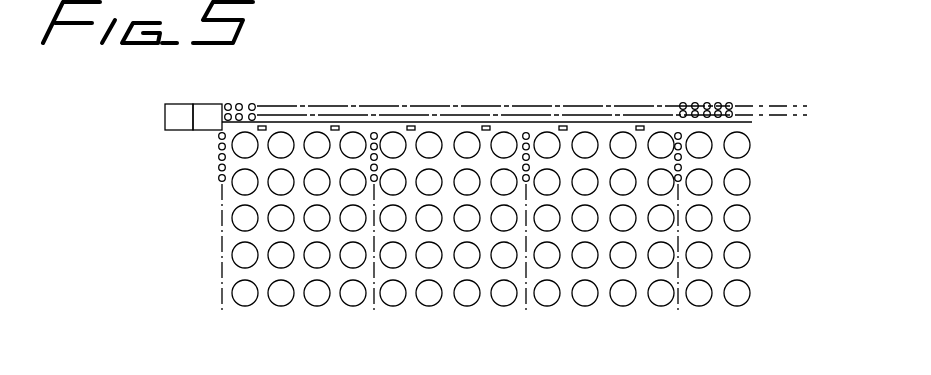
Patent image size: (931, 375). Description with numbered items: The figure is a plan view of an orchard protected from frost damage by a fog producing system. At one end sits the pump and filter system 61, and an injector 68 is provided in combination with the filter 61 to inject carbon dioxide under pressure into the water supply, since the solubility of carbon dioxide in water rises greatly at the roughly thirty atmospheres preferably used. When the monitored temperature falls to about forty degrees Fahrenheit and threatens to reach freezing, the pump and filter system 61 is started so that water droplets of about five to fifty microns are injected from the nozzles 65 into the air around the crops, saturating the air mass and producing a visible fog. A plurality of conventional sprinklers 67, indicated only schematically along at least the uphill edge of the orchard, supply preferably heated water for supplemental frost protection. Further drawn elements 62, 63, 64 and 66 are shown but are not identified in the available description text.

The pump and filter system 61 is at (222, 104).
The first conductor line 62 is at (305, 122).
The holes 63 is at (240, 189).
The dividing lines 64 is at (222, 280).
The nozzles 65 is at (242, 104).
The second conductor line 66 is at (447, 116).
The sprinklers 67 is at (563, 126).
The injector 68 is at (171, 104).